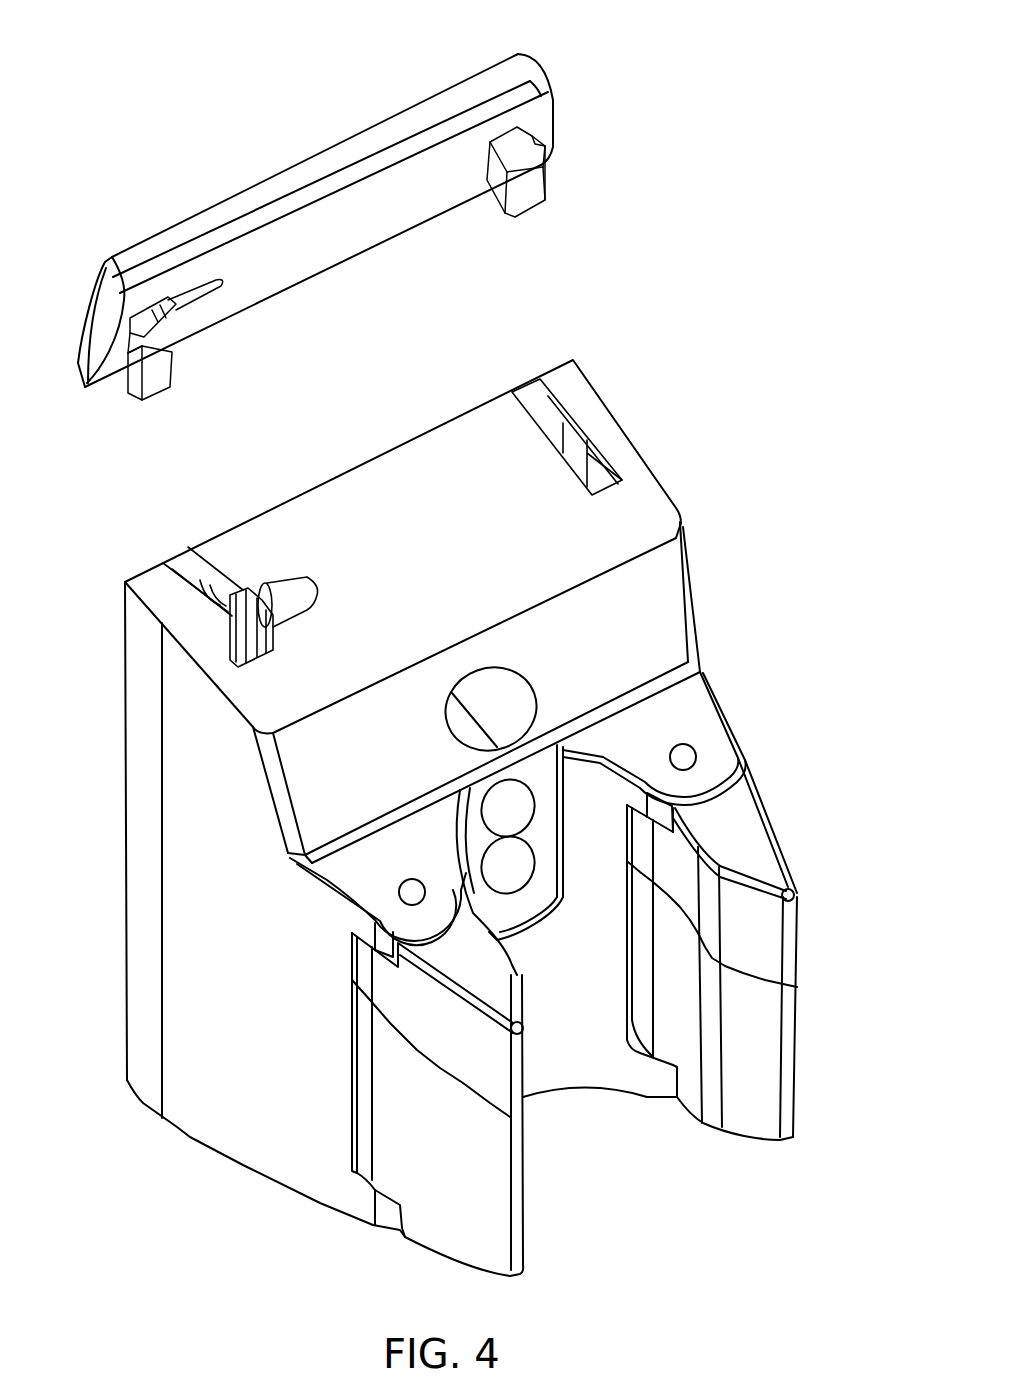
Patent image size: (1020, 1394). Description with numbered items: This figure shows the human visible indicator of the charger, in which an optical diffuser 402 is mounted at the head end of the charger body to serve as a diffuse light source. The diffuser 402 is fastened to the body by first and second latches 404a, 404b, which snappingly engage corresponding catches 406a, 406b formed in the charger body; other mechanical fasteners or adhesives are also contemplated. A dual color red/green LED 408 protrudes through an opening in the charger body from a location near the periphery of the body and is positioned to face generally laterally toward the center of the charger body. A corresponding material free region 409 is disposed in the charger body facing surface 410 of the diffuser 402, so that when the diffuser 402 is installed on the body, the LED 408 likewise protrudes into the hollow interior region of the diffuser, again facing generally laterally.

The optical diffuser 402 is at (560, 58).
The first latch 404a is at (157, 387).
The second latch 404b is at (527, 203).
The catch 406a is at (192, 593).
The catch 406b is at (542, 418).
The dual color red/green LED 408 is at (287, 588).
The material free region 409 is at (188, 298).
The charger body facing surface 410 is at (340, 235).